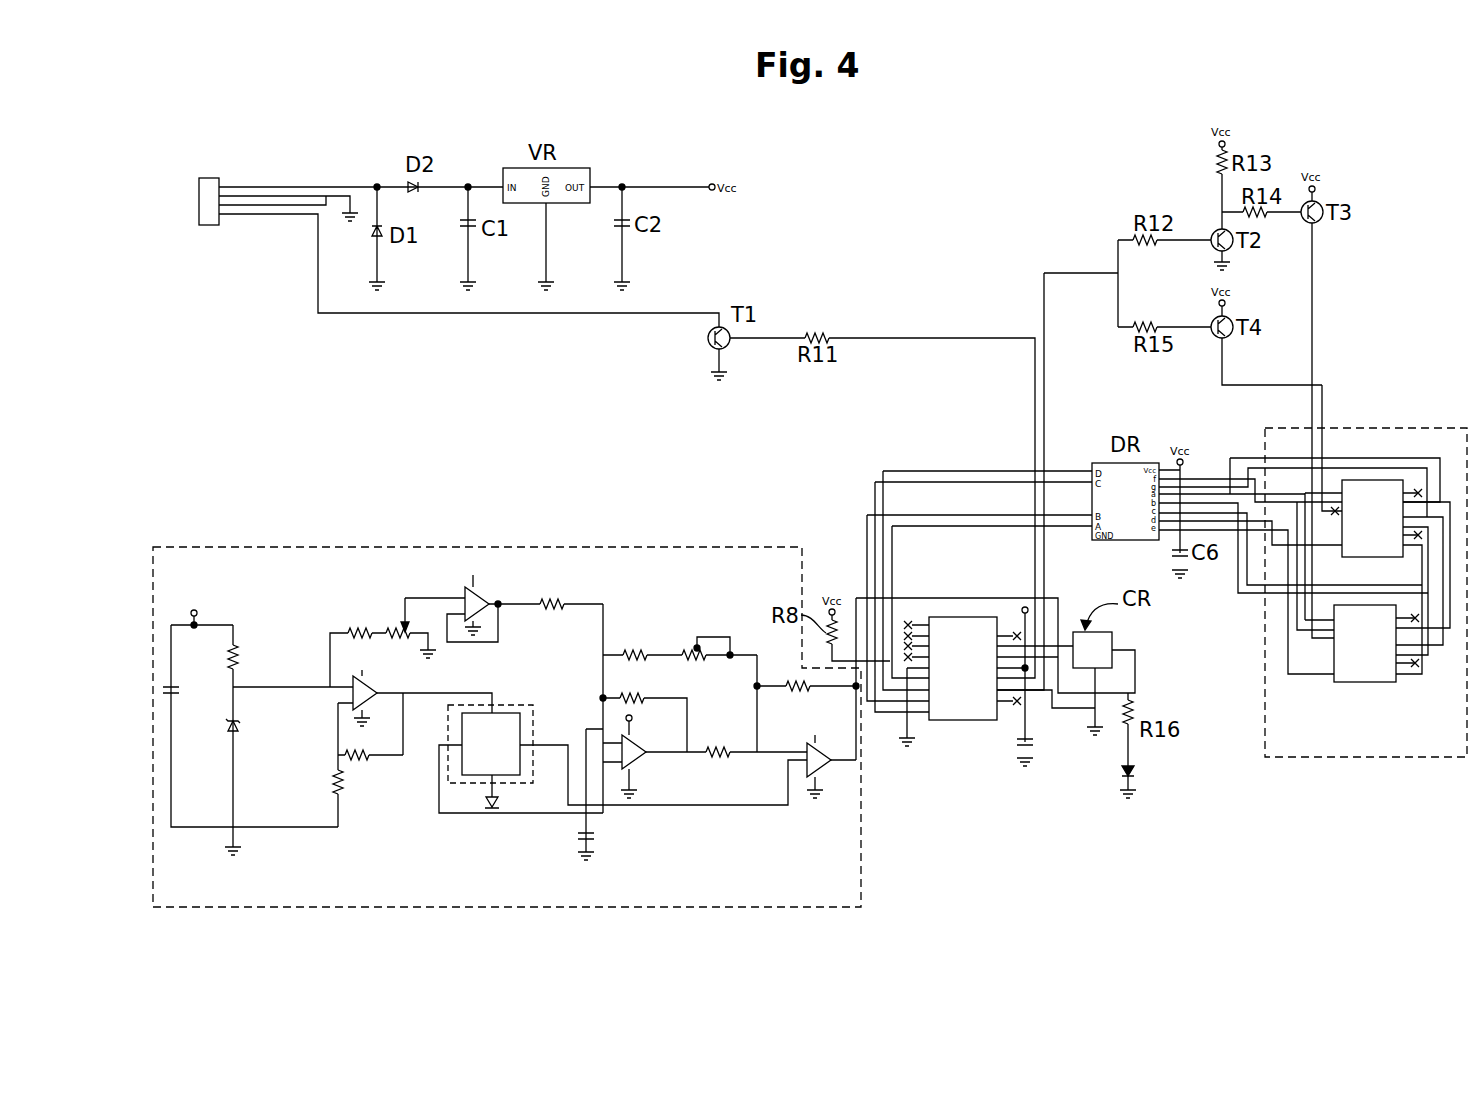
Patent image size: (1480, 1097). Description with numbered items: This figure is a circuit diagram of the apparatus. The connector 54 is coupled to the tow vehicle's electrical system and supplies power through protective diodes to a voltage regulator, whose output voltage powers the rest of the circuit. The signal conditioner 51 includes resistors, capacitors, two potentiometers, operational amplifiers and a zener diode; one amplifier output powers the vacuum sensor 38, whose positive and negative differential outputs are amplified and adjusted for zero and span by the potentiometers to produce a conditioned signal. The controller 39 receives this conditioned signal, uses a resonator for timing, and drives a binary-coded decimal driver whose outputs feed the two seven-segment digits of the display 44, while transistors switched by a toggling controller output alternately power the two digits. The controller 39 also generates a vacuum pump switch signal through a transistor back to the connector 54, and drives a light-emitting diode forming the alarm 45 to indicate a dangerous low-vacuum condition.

The connector 54 is at (205, 178).
The display 44 is at (1360, 428).
The signal conditioner 51 is at (484, 547).
The vacuum sensor 38 is at (462, 774).
The controller 39 is at (955, 720).
The alarm 45 is at (1142, 780).